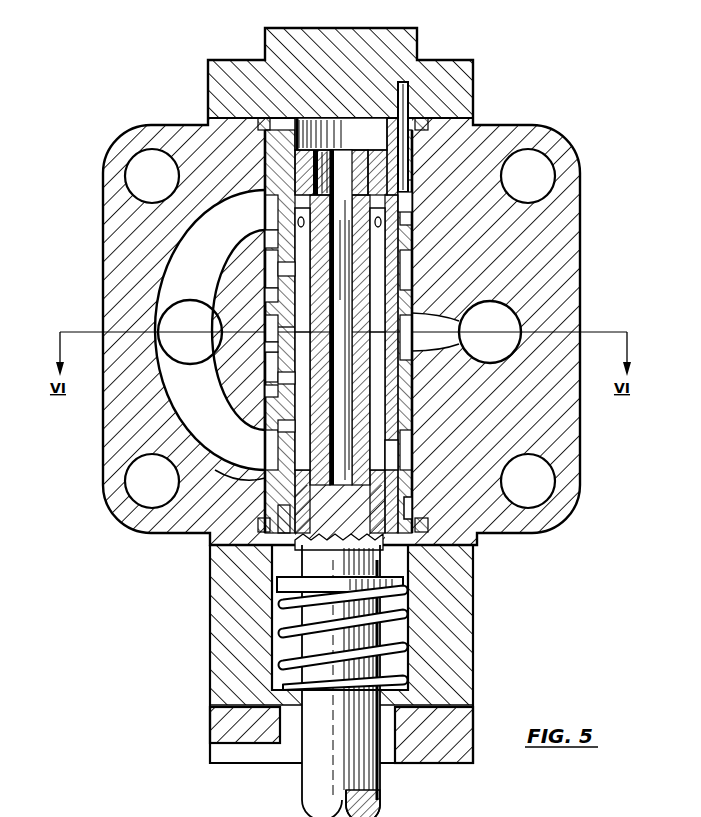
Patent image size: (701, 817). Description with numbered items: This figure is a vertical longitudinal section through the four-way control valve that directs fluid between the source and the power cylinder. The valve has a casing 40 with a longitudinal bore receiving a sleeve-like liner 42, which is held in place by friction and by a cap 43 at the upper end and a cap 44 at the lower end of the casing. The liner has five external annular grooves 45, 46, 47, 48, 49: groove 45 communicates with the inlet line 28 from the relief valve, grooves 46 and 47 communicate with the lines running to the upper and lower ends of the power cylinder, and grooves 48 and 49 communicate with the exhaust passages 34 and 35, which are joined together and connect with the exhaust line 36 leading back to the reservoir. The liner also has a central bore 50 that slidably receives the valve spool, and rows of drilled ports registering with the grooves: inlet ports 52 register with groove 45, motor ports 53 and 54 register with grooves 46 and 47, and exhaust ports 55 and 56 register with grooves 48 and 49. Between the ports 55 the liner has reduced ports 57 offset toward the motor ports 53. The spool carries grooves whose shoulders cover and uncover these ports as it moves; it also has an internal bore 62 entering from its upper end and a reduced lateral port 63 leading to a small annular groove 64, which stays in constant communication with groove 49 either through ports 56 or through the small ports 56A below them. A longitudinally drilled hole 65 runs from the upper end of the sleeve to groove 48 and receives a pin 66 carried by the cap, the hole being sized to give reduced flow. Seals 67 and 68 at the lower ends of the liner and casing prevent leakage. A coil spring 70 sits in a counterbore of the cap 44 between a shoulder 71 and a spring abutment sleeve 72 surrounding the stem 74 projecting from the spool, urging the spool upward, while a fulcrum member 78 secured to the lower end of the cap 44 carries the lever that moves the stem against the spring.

The inlet line 28 is at (495, 312).
The exhaust passage 34 is at (232, 197).
The exhaust passage 35 is at (226, 468).
The exhaust line 36 is at (175, 328).
The casing 40 is at (100, 216).
The liner 42 is at (258, 123).
The cap 43 is at (233, 70).
The cap 44 is at (215, 582).
The external annular groove 45 is at (272, 345).
The external annular groove 46 is at (272, 290).
The external annular groove 47 is at (284, 378).
The external annular groove 48 is at (270, 240).
The external annular groove 49 is at (262, 445).
The central bore 50 is at (292, 155).
The inlet ports 52 is at (292, 328).
The motor ports 53 is at (282, 268).
The motor ports 54 is at (288, 394).
The exhaust ports 55 is at (290, 212).
The exhaust ports 56 is at (282, 465).
The small ports 56A is at (278, 506).
The reduced ports 57 is at (380, 212).
The internal bore 62 is at (322, 165).
The laterally extending port 63 is at (318, 478).
The annular groove 64 is at (398, 455).
The drilled hole 65 is at (405, 170).
The pin 66 is at (400, 92).
The seal 67 is at (412, 510).
The seal 68 is at (420, 534).
The coil spring 70 is at (406, 645).
The shoulder 71 is at (282, 652).
The spring abutment sleeve 72 is at (403, 598).
The stem 74 is at (406, 676).
The fulcrum member 78 is at (215, 726).